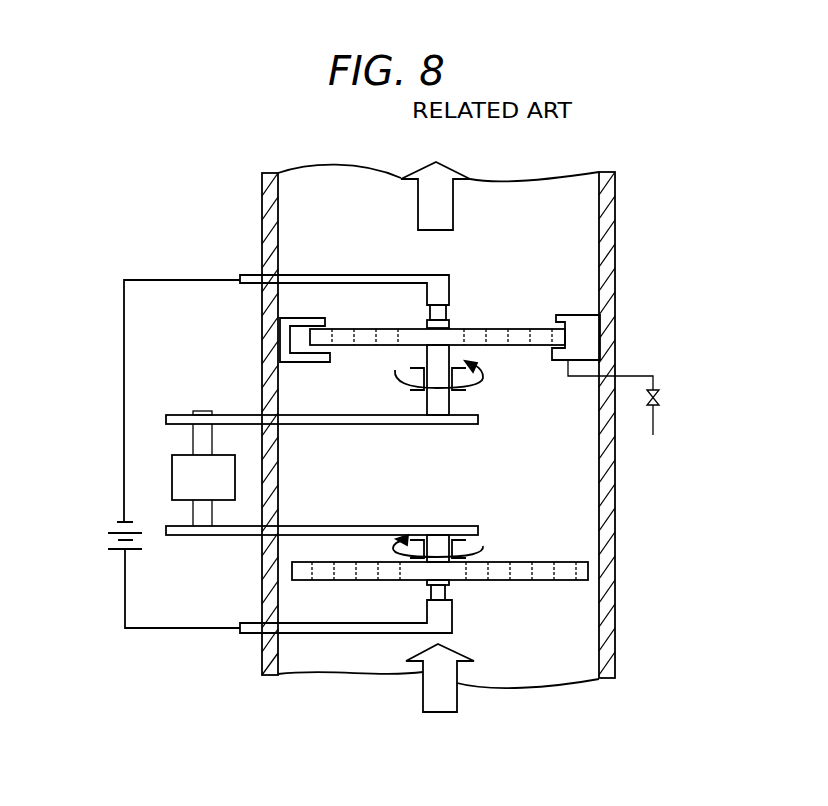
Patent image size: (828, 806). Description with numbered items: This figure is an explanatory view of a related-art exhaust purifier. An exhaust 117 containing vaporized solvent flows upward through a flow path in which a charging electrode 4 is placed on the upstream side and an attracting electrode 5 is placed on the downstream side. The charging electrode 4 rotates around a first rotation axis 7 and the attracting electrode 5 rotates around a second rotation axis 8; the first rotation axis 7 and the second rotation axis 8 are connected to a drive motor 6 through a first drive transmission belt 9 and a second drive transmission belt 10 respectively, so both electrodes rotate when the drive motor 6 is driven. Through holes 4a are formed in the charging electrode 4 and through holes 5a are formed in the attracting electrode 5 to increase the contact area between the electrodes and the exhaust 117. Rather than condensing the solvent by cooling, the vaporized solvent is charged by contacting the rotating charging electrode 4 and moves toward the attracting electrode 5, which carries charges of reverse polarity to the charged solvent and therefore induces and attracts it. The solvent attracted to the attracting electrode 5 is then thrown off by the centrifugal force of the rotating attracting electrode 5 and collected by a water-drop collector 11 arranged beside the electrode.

The charging electrode 4 is at (537, 560).
The through holes 4a is at (502, 572).
The attracting electrode 5 is at (497, 327).
The through holes 5a is at (520, 335).
The drive motor 6 is at (178, 480).
The first rotation axis 7 is at (438, 406).
The second rotation axis 8 is at (405, 548).
The first drive transmission belt 9 is at (242, 413).
The second drive transmission belt 10 is at (237, 537).
The water-drop collector 11 is at (600, 342).
The exhaust 117 is at (445, 687).